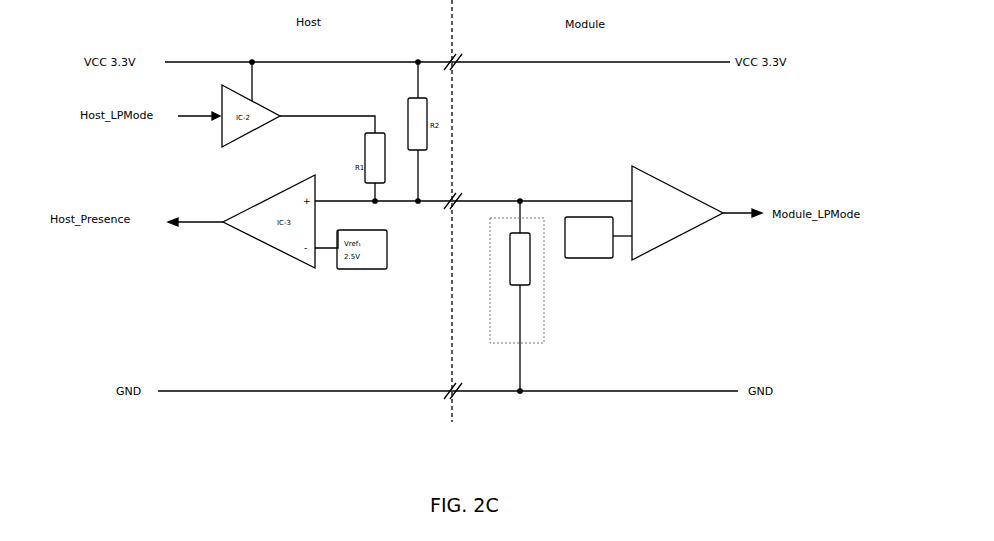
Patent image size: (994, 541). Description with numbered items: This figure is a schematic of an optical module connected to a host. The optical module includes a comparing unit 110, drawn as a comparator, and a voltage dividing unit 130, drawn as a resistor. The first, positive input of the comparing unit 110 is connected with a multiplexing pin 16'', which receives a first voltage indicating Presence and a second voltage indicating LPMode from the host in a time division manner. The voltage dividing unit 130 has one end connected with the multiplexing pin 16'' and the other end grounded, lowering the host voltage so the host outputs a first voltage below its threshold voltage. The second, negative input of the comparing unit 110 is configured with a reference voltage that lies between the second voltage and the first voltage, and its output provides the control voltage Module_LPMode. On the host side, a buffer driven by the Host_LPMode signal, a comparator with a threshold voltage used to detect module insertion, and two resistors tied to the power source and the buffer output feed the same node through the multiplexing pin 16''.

The multiplexing pin 16'' is at (493, 211).
The comparing unit 110 is at (695, 178).
The voltage dividing unit 130 is at (538, 322).